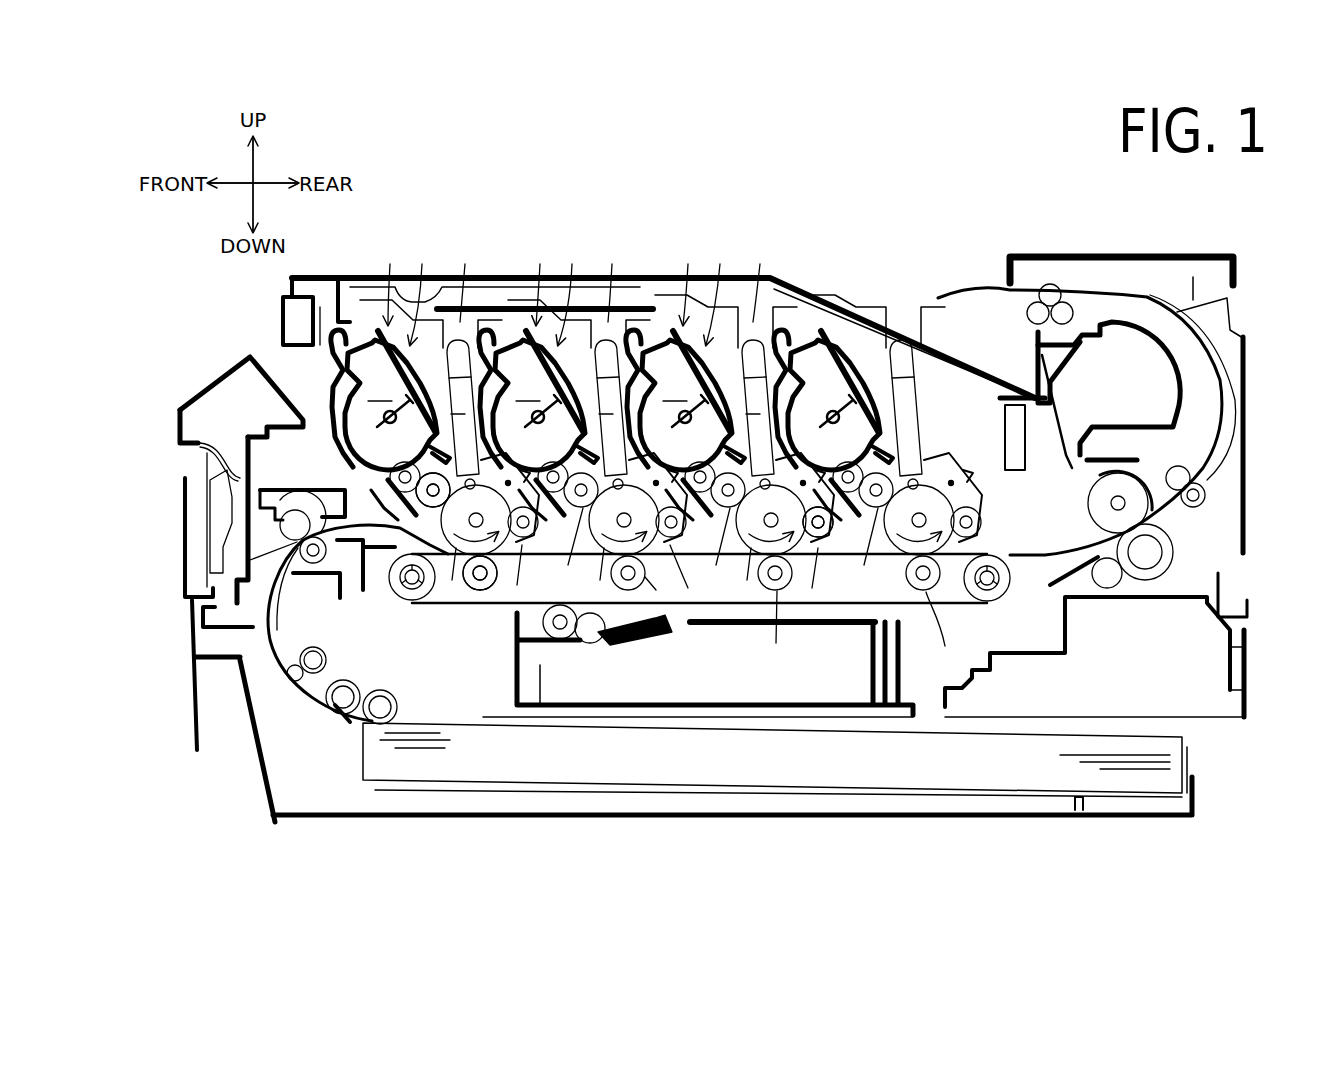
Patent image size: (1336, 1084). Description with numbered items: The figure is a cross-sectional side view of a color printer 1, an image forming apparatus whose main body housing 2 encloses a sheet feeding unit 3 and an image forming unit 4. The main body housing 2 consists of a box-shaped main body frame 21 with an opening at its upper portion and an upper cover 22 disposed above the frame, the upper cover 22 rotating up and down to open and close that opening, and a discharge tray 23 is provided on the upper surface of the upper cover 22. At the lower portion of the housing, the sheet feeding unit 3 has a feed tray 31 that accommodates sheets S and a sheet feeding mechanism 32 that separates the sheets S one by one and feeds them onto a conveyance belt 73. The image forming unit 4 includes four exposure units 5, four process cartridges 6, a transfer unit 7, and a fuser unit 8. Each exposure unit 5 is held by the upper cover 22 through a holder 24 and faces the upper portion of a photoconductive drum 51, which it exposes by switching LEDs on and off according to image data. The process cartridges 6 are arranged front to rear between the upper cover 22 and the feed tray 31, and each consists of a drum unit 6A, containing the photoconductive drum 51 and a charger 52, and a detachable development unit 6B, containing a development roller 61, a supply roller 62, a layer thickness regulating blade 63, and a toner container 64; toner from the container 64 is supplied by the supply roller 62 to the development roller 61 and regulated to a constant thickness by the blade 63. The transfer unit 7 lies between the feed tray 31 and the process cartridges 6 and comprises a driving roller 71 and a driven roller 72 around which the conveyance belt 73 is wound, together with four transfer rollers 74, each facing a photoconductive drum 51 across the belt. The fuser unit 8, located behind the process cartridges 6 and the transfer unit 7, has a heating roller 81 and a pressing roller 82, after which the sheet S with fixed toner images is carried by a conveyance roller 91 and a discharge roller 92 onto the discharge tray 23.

The color printer 1 is at (1010, 160).
The main body housing 2 is at (1145, 238).
The sheet feeding unit 3 is at (685, 747).
The image forming unit 4 is at (318, 382).
The exposure unit 5 is at (906, 414).
The process cartridge 6 is at (922, 454).
The drum unit 6A is at (997, 497).
The development unit 6B is at (852, 335).
The transfer unit 7 is at (814, 635).
The fuser unit 8 is at (1162, 456).
The main body frame 21 is at (218, 376).
The upper cover 22 is at (286, 280).
The discharge tray 23 is at (948, 350).
The holder 24 is at (874, 301).
The feed tray 31 is at (265, 760).
The sheet feeding mechanism 32 is at (333, 712).
The photoconductive drum 51 is at (916, 541).
The charger 52 is at (942, 453).
The development roller 61 is at (416, 491).
The supply roller 62 is at (832, 537).
The layer thickness regulating blade 63 is at (849, 456).
The container 64 is at (840, 405).
The driving roller 71 is at (987, 602).
The driven roller 72 is at (410, 601).
The conveyance belt 73 is at (665, 628).
The transfer roller 74 is at (483, 591).
The heating roller 81 is at (1150, 505).
The pressing roller 82 is at (1243, 575).
The conveyance roller 91 is at (1207, 492).
The discharge roller 92 is at (1050, 284).
The sheet S is at (455, 728).